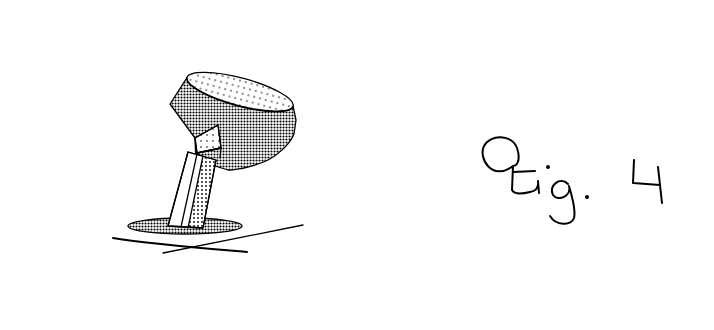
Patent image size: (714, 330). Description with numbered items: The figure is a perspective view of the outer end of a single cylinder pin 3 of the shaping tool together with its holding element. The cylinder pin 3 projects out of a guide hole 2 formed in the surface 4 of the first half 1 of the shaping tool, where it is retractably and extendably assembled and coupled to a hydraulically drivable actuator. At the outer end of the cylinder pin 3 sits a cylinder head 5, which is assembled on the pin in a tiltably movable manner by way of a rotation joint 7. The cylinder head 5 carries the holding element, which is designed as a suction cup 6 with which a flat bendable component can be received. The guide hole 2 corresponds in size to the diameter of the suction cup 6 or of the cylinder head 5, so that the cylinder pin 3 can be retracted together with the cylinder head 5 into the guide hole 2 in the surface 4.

The first half of the shaping tool 1 is at (113, 225).
The guide hole 2 is at (242, 226).
The cylinder pin 3 is at (220, 185).
The surface 4 is at (255, 238).
The cylinder head 5 is at (288, 131).
The suction cup 6 is at (262, 91).
The rotation joint 7 is at (197, 138).